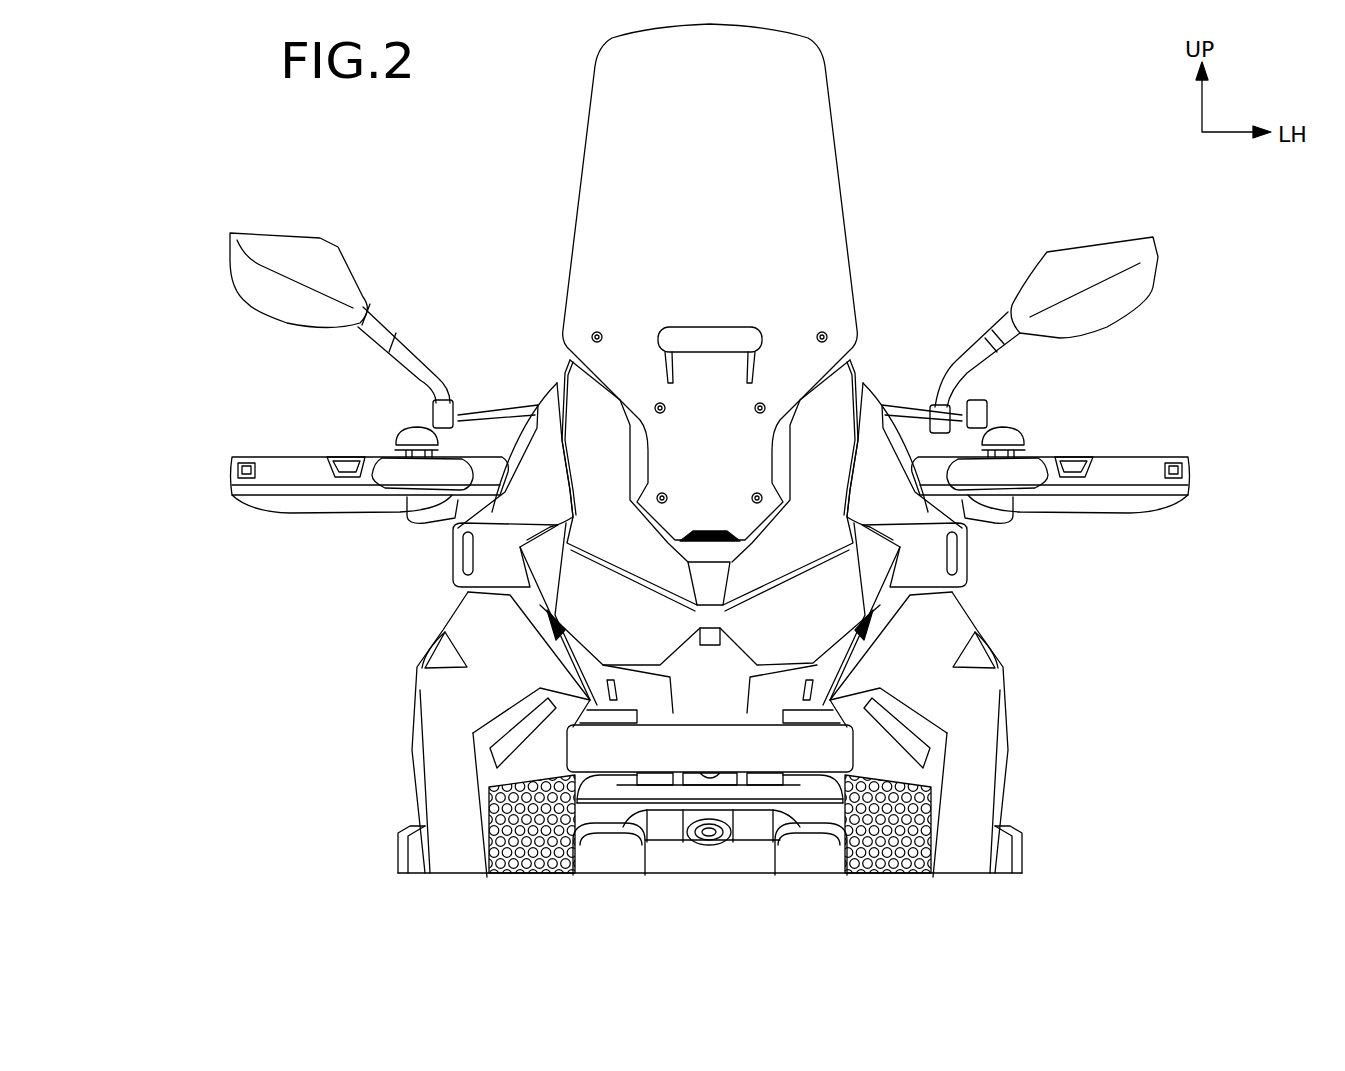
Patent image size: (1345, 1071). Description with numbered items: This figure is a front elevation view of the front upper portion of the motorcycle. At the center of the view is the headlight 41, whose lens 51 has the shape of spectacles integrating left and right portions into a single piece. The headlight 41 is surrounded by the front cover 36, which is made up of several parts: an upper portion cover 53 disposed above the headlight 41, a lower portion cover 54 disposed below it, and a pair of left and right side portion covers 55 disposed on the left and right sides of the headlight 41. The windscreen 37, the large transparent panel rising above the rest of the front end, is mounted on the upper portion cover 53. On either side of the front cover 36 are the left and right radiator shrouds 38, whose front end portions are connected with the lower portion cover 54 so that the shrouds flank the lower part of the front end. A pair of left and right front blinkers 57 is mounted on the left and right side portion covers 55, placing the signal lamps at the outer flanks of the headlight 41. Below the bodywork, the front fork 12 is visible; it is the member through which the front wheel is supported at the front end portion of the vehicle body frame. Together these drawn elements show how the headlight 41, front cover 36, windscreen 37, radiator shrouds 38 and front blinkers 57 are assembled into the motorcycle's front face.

The front fork 12 is at (598, 876).
The front cover 36 is at (556, 358).
The windscreen 37 is at (602, 108).
The radiator shrouds 38 is at (427, 743).
The headlight 41 is at (590, 633).
The lens 51 is at (820, 608).
The upper portion cover 53 is at (850, 385).
The lower portion cover 54 is at (770, 692).
The side portion covers 55 is at (505, 540).
The front blinkers 57 is at (398, 467).